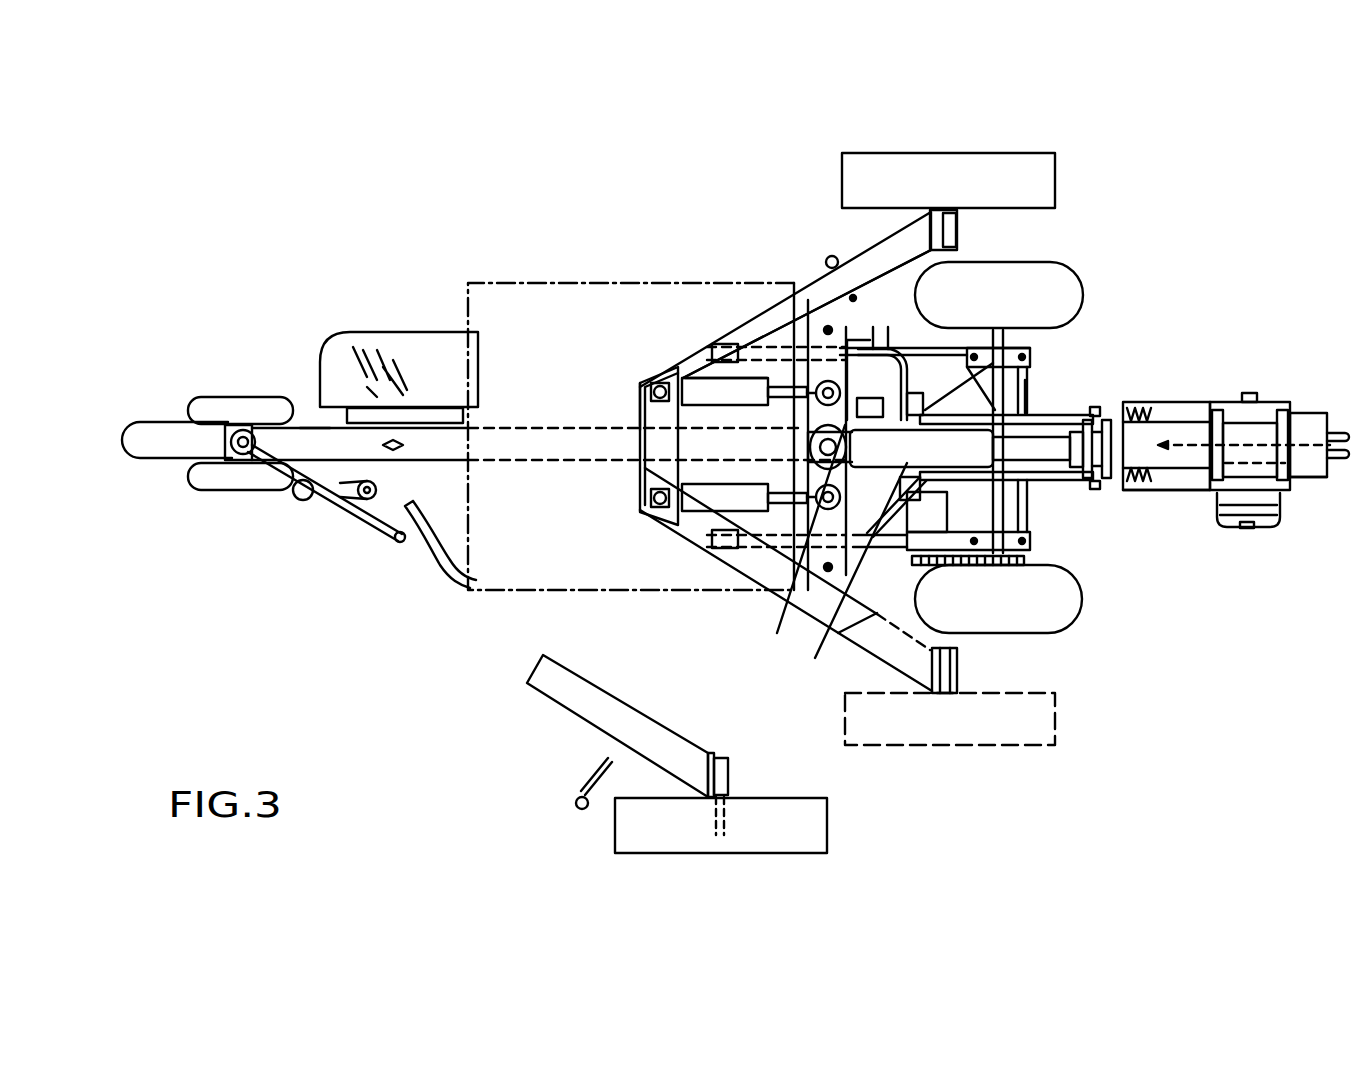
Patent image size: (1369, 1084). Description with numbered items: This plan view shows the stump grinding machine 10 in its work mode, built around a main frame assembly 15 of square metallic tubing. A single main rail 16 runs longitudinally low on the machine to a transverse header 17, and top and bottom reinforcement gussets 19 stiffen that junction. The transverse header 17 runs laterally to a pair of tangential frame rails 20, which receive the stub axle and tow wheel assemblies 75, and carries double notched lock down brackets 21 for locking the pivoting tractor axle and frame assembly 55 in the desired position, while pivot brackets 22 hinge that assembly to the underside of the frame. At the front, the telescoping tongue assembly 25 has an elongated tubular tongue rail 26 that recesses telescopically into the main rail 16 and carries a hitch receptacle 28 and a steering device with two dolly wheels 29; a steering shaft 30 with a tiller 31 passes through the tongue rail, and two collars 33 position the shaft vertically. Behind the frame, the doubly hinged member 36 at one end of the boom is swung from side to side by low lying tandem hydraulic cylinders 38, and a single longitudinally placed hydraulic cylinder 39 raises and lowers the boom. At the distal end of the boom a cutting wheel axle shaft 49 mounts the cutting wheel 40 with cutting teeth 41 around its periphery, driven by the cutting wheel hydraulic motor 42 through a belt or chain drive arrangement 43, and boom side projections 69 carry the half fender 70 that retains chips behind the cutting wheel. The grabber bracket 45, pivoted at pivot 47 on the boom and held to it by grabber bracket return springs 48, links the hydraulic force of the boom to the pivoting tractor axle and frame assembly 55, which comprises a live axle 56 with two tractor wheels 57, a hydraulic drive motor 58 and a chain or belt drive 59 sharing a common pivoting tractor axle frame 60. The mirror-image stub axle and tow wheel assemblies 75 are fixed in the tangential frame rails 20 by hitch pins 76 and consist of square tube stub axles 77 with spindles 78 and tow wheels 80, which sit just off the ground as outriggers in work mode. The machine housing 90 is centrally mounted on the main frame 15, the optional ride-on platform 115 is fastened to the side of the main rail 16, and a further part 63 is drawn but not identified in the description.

The stump grinding machine 10 is at (373, 547).
The main frame assembly 15 is at (622, 427).
The main rail 16 is at (570, 427).
The transverse header 17 is at (793, 350).
The reinforcement gussets 19 is at (773, 382).
The tangential frame rails 20 is at (800, 333).
The double notched lock down brackets 21 is at (840, 337).
The pivot brackets 22 is at (700, 376).
The telescoping tongue assembly 25 is at (313, 427).
The tongue rail 26 is at (282, 425).
The hitch receptacle 28 is at (157, 417).
The dolly wheels 29 is at (233, 423).
The steering shaft 30 is at (243, 462).
The tiller 31 is at (348, 513).
The collars 33 is at (240, 433).
The doubly hinged member 36 is at (798, 548).
The tandem hydraulic cylinders 38 is at (683, 380).
The hydraulic cylinder 39 is at (847, 575).
The cutting wheel 40 is at (1190, 440).
The cutting teeth 41 is at (1346, 433).
The cutting wheel hydraulic motor 42 is at (1267, 407).
The belt or chain drive arrangement 43 is at (1268, 513).
The grabber bracket 45 is at (1030, 352).
The grabber bracket pivot 47 is at (1097, 408).
The grabber bracket return springs 48 is at (1140, 404).
The cutting wheel axle shaft 49 is at (1247, 393).
The pivoting tractor axle and frame assembly 55 is at (967, 365).
The live axle 56 is at (1035, 508).
The tractor wheels 57 is at (1072, 267).
The hydraulic drive motor 58 is at (1035, 530).
The chain or belt drive 59 is at (1025, 560).
The pivoting tractor axle frame 60 is at (878, 378).
The upright 63 is at (1030, 400).
The boom side projections 69 is at (1313, 478).
The half fender 70 is at (1195, 494).
The stub axle and tow wheel assemblies 75 is at (840, 167).
The hitch pins 76 is at (870, 283).
The stub axles 77 is at (873, 238).
The spindles 78 is at (957, 228).
The tow wheels 80 is at (1055, 160).
The machine housing 90 is at (641, 408).
The ride-on platform 115 is at (387, 332).